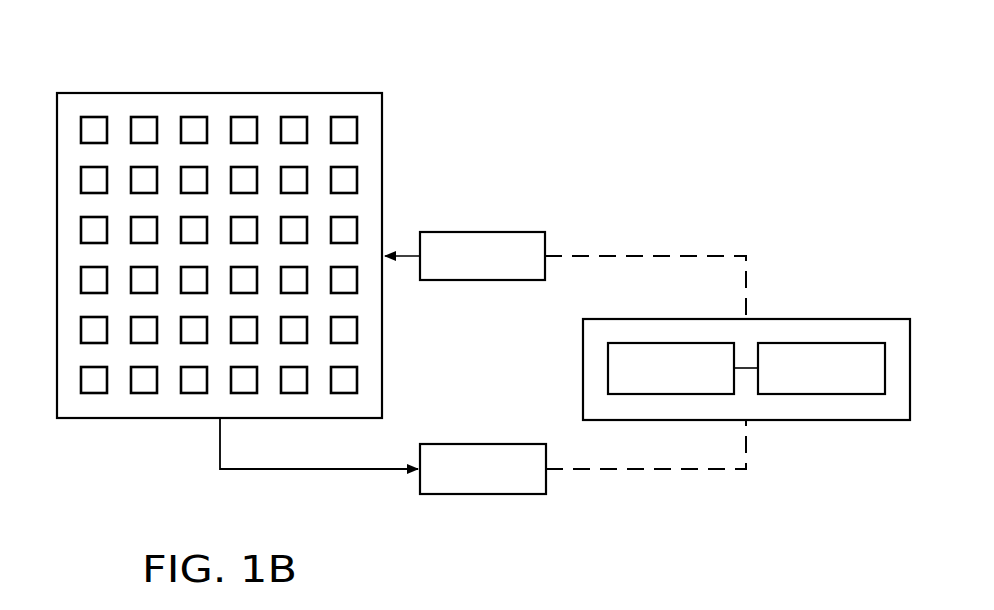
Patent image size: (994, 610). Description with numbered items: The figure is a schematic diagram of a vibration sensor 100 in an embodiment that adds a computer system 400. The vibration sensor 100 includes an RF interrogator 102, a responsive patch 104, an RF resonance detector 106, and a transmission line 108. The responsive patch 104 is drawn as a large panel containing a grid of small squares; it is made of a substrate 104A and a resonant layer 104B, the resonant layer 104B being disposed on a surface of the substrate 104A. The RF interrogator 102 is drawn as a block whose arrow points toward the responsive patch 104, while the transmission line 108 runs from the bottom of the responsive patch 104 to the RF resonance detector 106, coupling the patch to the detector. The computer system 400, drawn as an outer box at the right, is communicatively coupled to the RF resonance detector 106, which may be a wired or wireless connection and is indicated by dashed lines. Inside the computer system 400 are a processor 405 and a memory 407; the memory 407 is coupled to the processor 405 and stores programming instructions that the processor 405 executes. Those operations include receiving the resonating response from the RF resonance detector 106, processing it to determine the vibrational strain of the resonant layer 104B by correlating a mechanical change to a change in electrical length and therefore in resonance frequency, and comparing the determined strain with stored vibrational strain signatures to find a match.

The vibration sensor 100 is at (712, 91).
The RF interrogator 102 is at (483, 280).
The responsive patch 104 is at (106, 66).
The substrate 104A is at (206, 92).
The resonant layer 104B is at (93, 394).
The RF resonance detector 106 is at (483, 494).
The transmission line 108 is at (318, 469).
The computer system 400 is at (787, 317).
The processor 405 is at (694, 383).
The memory 407 is at (845, 383).